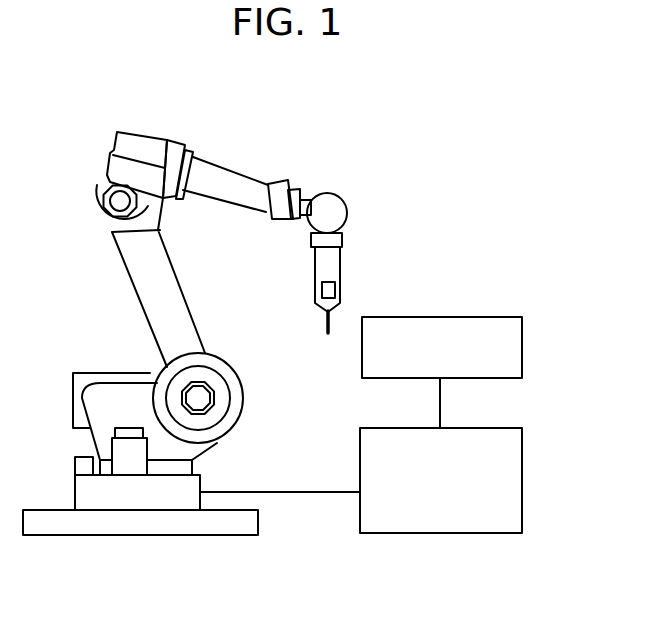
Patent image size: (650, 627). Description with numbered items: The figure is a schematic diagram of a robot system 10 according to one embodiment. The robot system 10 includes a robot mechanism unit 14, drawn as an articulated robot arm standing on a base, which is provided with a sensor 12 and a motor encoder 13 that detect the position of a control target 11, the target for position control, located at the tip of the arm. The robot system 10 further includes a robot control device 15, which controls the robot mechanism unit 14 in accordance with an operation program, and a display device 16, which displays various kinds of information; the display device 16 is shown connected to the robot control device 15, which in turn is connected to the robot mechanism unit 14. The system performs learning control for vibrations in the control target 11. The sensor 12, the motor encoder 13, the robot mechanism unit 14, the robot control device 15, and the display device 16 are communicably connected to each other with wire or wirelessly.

The robot system 10 is at (452, 147).
The control target 11 is at (321, 325).
The sensor 12 is at (329, 288).
The motor encoder 13 is at (118, 202).
The robot mechanism unit 14 is at (237, 173).
The robot control device 15 is at (492, 428).
The display device 16 is at (492, 317).